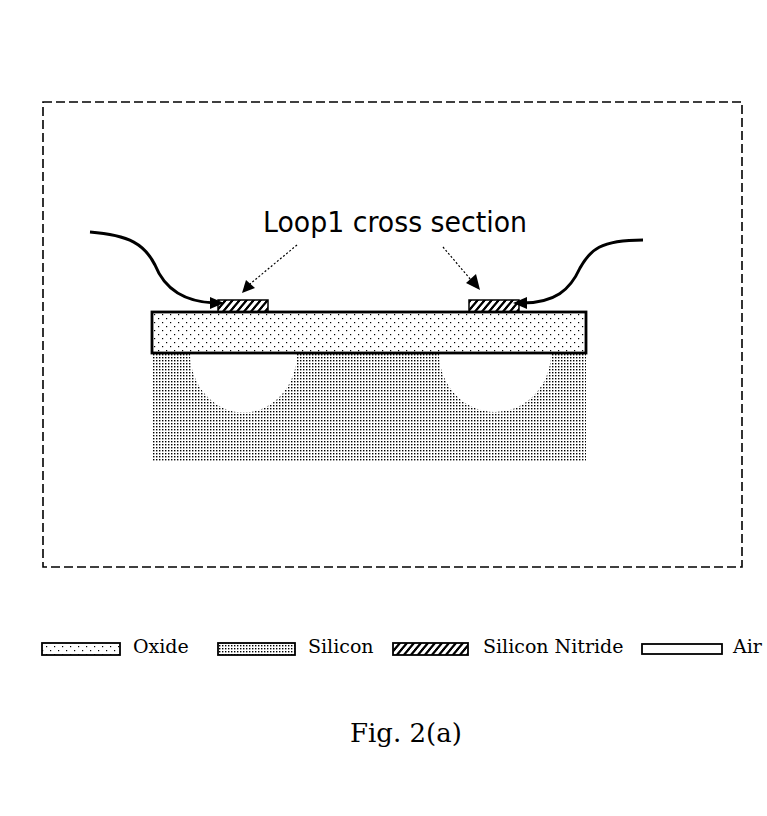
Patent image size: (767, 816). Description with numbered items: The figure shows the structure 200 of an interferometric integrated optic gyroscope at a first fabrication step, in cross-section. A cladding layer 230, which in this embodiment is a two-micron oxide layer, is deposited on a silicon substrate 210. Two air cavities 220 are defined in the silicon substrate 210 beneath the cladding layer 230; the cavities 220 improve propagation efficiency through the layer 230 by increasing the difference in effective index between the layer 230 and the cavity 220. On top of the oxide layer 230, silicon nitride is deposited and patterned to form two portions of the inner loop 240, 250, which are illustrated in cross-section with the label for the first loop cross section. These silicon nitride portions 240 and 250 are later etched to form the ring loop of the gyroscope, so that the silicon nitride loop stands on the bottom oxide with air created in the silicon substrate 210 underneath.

The structure 200 is at (640, 91).
The silicon substrate 210 is at (176, 451).
The air cavities 220 is at (528, 386).
The cladding layer 230 is at (560, 331).
The inner loop portion 240 is at (144, 252).
The inner loop portion 250 is at (601, 267).